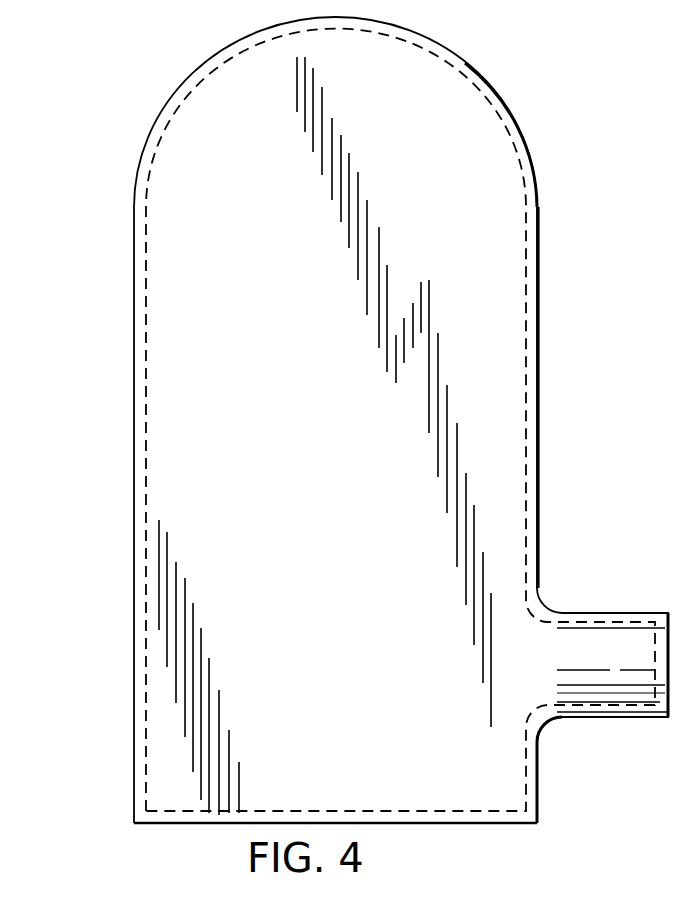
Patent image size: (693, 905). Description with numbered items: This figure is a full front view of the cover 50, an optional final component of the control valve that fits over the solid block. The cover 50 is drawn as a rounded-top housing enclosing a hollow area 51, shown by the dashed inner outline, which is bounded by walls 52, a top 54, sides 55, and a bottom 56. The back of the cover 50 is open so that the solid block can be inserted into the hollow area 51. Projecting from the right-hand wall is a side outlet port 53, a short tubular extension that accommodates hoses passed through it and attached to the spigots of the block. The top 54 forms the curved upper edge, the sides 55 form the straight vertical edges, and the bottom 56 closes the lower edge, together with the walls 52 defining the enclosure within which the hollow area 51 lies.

The cover 50 is at (145, 113).
The hollow area 51 is at (487, 370).
The walls 52 is at (538, 305).
The side outlet port 53 is at (610, 613).
The top 54 is at (437, 47).
The sides 55 is at (134, 415).
The bottom 56 is at (435, 823).